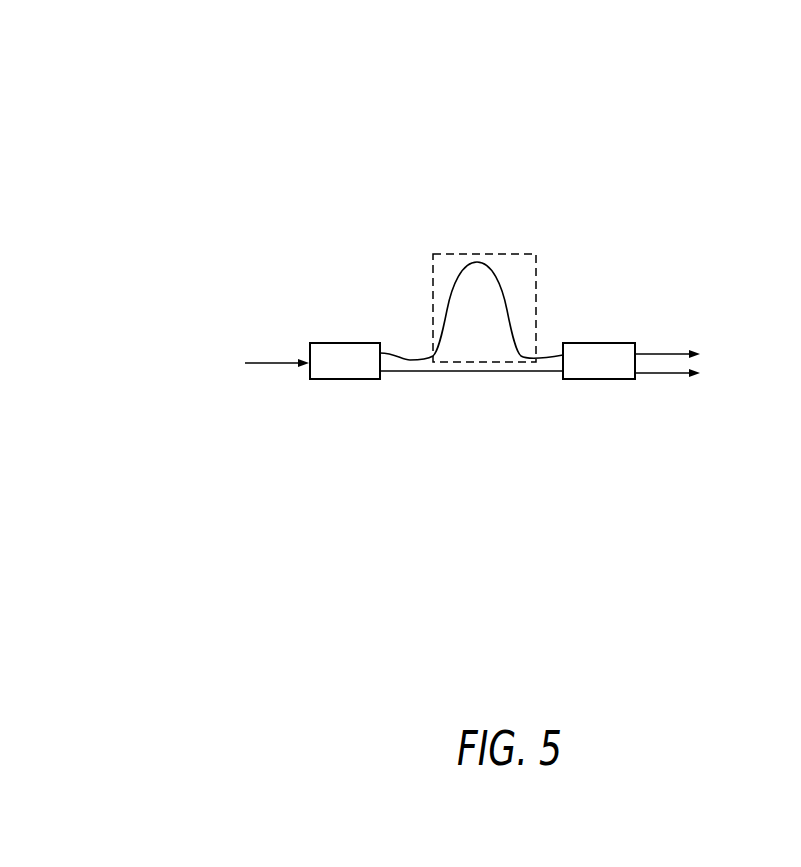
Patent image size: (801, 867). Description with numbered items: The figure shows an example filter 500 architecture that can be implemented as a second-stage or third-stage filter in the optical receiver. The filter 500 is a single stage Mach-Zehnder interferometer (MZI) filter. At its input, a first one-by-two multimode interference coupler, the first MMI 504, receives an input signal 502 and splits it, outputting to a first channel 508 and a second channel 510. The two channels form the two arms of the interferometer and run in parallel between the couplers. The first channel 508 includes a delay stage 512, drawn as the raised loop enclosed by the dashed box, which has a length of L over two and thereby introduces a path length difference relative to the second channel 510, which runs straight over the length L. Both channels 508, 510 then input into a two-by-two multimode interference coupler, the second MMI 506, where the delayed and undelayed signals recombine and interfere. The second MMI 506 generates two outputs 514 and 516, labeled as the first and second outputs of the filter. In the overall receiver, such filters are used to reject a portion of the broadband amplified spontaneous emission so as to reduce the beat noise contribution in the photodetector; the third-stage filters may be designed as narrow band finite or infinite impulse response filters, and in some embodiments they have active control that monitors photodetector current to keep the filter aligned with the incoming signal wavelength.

The filter 500 is at (158, 108).
The input signal 502 is at (289, 362).
The first 1×2 MMI 504 is at (362, 344).
The 2×2 MMI 506 is at (617, 343).
The first channel 508 is at (414, 357).
The second channel 510 is at (402, 372).
The delay stage 512 is at (432, 270).
The output 514 is at (677, 352).
The output 516 is at (650, 375).